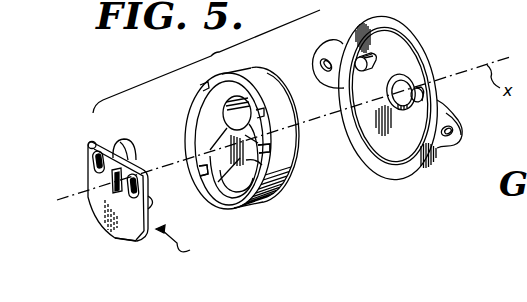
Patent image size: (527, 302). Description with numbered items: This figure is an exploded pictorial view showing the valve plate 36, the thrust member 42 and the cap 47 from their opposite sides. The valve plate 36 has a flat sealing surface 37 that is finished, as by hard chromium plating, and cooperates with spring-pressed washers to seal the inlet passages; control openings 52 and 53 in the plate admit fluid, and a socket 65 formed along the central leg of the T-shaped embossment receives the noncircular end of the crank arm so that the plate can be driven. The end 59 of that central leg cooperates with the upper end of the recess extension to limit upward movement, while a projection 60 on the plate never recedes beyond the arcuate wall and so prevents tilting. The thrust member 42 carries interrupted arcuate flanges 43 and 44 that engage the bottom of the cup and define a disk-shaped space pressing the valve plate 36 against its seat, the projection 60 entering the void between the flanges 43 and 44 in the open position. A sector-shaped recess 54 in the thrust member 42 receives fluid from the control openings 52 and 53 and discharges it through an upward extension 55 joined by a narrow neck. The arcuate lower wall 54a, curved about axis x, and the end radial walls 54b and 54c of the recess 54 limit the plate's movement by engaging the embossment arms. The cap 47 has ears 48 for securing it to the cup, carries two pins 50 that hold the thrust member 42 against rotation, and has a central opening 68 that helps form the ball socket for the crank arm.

The valve plate 36 is at (184, 242).
The flat sealing surface 37 is at (100, 202).
The thrust member 42 is at (295, 177).
The interrupted arcuate flange 43 is at (186, 112).
The interrupted arcuate flange 44 is at (264, 148).
The cap 47 is at (410, 172).
The ear 48 is at (334, 45).
The pin 50 is at (371, 53).
The control opening 52 is at (92, 153).
The control opening 53 is at (138, 185).
The recess 54 is at (237, 168).
The lower wall 54a is at (235, 183).
The end radial wall 54b is at (250, 167).
The end radial wall 54c is at (213, 148).
The upward extension 55 is at (241, 105).
The end of central leg 59 is at (127, 138).
The projection 60 is at (116, 238).
The socket 65 is at (112, 179).
The central opening 68 is at (403, 80).